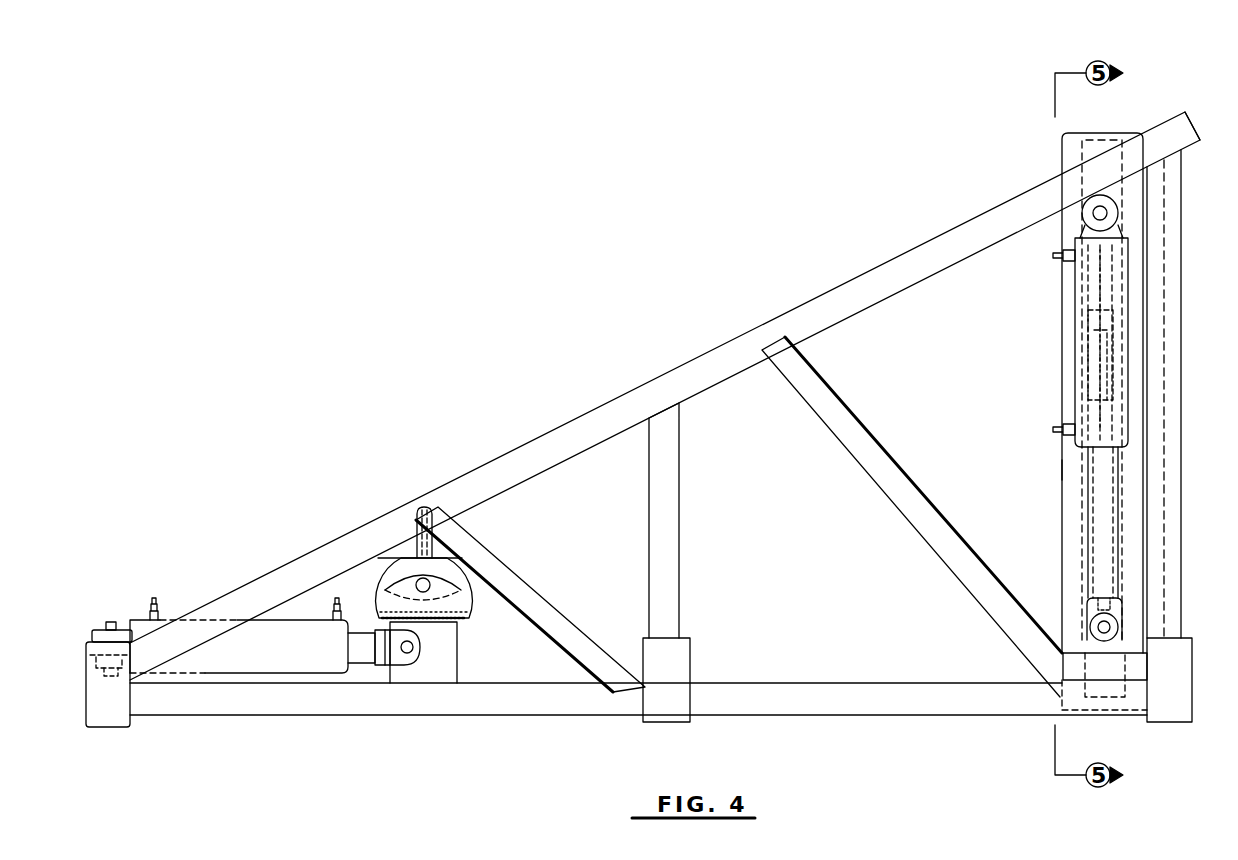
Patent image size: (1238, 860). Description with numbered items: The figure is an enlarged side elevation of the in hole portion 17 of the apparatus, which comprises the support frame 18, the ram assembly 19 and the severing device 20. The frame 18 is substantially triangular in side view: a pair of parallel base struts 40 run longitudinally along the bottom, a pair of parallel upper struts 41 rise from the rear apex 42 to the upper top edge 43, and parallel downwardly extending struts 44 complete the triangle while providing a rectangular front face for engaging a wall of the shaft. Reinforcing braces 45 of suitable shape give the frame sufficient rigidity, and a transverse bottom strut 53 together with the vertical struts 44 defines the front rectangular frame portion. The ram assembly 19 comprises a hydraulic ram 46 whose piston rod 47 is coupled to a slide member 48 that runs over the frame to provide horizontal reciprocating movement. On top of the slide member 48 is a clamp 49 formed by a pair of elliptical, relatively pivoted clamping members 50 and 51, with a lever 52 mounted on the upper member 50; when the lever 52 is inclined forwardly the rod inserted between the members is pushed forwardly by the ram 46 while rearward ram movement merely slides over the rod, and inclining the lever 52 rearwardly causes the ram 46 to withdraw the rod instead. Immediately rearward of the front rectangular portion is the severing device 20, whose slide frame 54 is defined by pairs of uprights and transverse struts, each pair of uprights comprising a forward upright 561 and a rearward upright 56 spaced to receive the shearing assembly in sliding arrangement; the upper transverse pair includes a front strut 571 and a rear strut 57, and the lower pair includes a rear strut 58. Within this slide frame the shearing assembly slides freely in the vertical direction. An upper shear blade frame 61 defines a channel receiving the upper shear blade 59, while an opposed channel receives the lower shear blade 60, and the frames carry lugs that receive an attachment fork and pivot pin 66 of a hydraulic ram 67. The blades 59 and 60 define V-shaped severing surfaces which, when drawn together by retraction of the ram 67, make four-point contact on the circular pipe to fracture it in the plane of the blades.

The in hole portion 17 is at (682, 386).
The support frame 18 is at (638, 697).
The ram assembly 19 is at (275, 647).
The severing device 20 is at (1032, 418).
The base struts 40 is at (553, 703).
The upper struts 41 is at (537, 448).
The apex 42 is at (100, 702).
The upper top edge 43 is at (1180, 126).
The downwardly extending struts 44 is at (1178, 490).
The reinforcing braces 45 is at (667, 587).
The hydraulic ram 46 is at (265, 660).
The piston rod 47 is at (363, 650).
The slide member 48 is at (447, 643).
The clamp 49 is at (463, 555).
The upper clamping member 50 is at (388, 562).
The lower clamping member 51 is at (378, 597).
The lever 52 is at (422, 542).
The transverse bottom strut 53 is at (1192, 660).
The slide frame 54 is at (1055, 470).
The rearward upright 56 is at (1072, 518).
The forward upright 561 is at (1165, 550).
The rear strut 57 is at (1067, 133).
The front strut 571 is at (1125, 138).
The rear strut 58 is at (1062, 663).
The upper shear blade 59 is at (1060, 418).
The lower shear blade 60 is at (1104, 597).
The upper shear blade frame 61 is at (1097, 288).
The pivot pin 66 is at (1095, 215).
The hydraulic ram 67 is at (1080, 276).